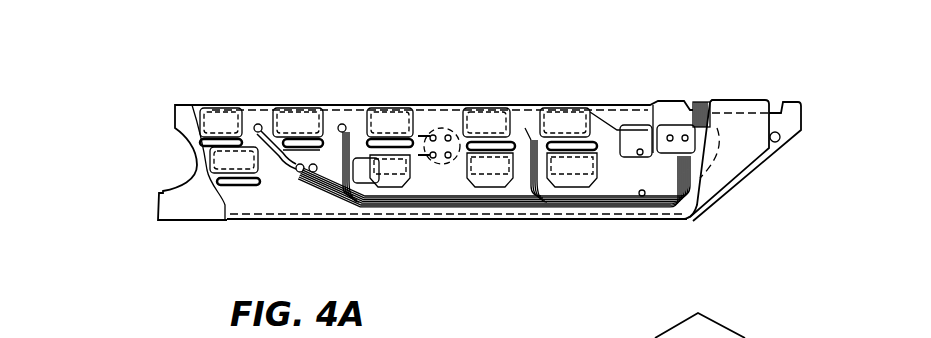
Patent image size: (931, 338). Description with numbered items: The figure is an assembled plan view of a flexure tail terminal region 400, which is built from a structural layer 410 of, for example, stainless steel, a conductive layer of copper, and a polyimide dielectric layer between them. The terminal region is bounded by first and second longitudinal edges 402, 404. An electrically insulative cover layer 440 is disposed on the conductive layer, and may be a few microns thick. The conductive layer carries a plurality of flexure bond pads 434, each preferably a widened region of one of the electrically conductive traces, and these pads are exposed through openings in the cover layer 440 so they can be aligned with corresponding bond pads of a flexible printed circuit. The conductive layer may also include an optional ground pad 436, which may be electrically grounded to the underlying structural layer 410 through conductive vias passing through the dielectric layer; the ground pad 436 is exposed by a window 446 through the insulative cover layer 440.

The flexure tail terminal region 400 is at (140, 98).
The first longitudinal edge 402 is at (597, 103).
The second longitudinal edge 404 is at (400, 220).
The structural layer 410 is at (787, 123).
The flexure bond pads 434 is at (237, 165).
The ground pad 436 is at (672, 130).
The cover layer 440 is at (732, 105).
The window 446 is at (662, 325).